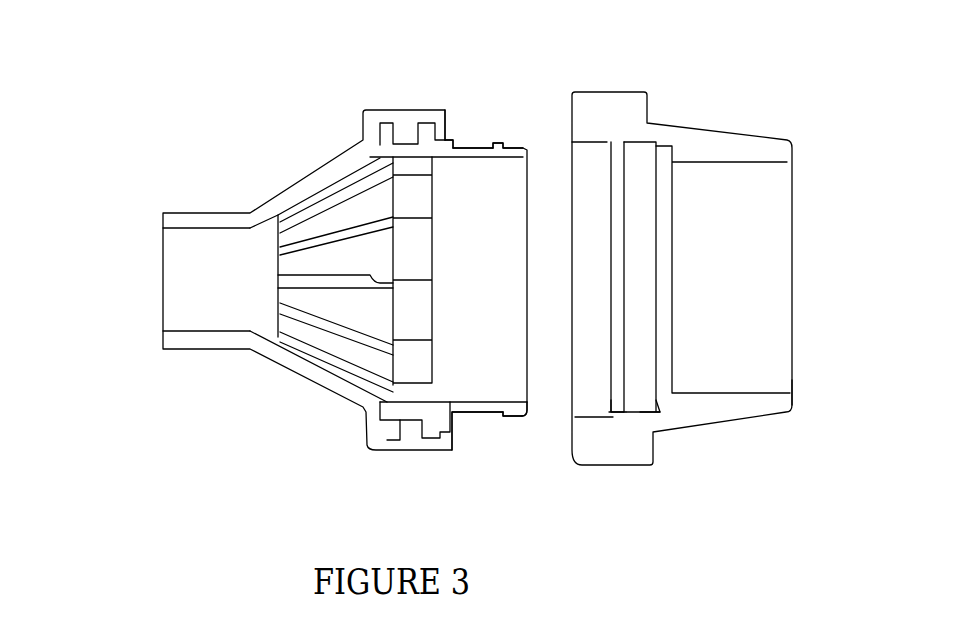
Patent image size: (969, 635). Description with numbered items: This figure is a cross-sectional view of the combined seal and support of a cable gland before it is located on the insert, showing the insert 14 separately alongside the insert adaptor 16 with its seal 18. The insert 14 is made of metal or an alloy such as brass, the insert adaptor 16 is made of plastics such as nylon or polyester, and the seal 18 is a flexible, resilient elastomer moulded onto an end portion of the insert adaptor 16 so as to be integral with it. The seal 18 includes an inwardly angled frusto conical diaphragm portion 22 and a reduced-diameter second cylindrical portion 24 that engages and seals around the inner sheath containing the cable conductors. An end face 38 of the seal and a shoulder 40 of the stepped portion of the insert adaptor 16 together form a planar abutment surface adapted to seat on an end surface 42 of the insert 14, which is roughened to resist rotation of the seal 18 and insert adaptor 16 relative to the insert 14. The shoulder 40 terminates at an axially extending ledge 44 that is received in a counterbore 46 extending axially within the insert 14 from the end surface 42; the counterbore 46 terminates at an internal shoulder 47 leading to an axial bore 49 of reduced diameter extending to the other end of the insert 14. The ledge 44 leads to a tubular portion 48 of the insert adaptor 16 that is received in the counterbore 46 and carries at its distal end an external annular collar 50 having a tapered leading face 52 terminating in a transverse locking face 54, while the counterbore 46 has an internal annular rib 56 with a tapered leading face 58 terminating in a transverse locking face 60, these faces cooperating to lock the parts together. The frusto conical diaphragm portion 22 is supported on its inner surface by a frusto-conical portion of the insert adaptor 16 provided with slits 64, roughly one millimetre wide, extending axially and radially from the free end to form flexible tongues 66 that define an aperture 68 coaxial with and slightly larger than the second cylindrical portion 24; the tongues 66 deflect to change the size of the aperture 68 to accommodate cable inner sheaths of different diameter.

The insert 14 is at (737, 148).
The insert adaptor 16 is at (390, 420).
The seal 18 is at (308, 386).
The frusto conical diaphragm portion 22 is at (317, 173).
The second cylindrical portion 24 is at (183, 220).
The end face 38 is at (447, 133).
The shoulder 40 is at (452, 137).
The end surface 42 is at (574, 452).
The ledge 44 is at (457, 140).
The counterbore 46 is at (593, 142).
The internal shoulder 47 is at (665, 148).
The tubular portion 48 is at (475, 405).
The axial bore 49 is at (767, 392).
The external annular collar 50 is at (507, 143).
The tapered leading face 52 is at (523, 415).
The transverse locking face 54 is at (493, 412).
The internal annular rib 56 is at (618, 142).
The tapered leading face 58 is at (610, 408).
The transverse locking face 60 is at (647, 413).
The slits 64 is at (302, 277).
The flexible tongues 66 is at (310, 300).
The aperture 68 is at (275, 300).